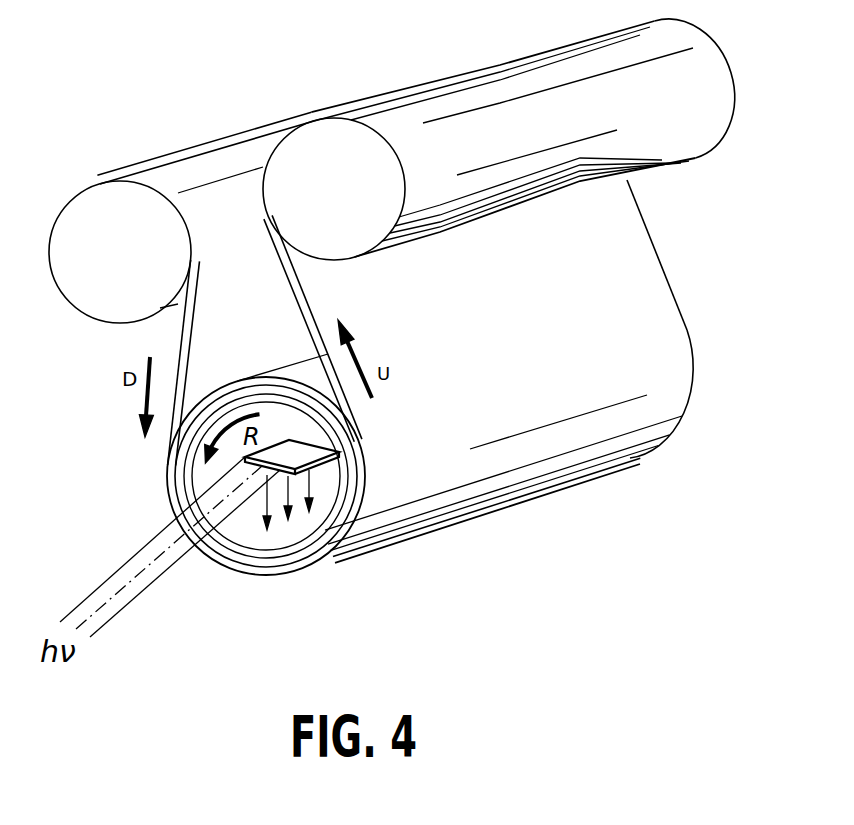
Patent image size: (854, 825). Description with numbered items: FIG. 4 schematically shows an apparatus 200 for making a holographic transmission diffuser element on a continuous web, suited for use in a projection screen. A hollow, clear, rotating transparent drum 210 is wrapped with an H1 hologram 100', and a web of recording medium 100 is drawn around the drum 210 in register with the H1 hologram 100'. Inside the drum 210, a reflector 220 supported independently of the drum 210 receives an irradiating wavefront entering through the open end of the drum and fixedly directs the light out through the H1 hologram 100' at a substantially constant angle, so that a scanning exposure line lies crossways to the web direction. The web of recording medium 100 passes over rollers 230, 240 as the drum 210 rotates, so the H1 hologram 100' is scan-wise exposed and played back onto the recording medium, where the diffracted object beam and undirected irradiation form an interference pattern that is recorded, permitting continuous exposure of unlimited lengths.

The web of recording medium 100 is at (392, 288).
The H1 hologram 100' is at (403, 500).
The apparatus 200 is at (712, 486).
The hollow rotating transparent drum 210 is at (338, 518).
The reflector 220 is at (316, 446).
The roller 230 is at (132, 267).
The roller 240 is at (347, 201).